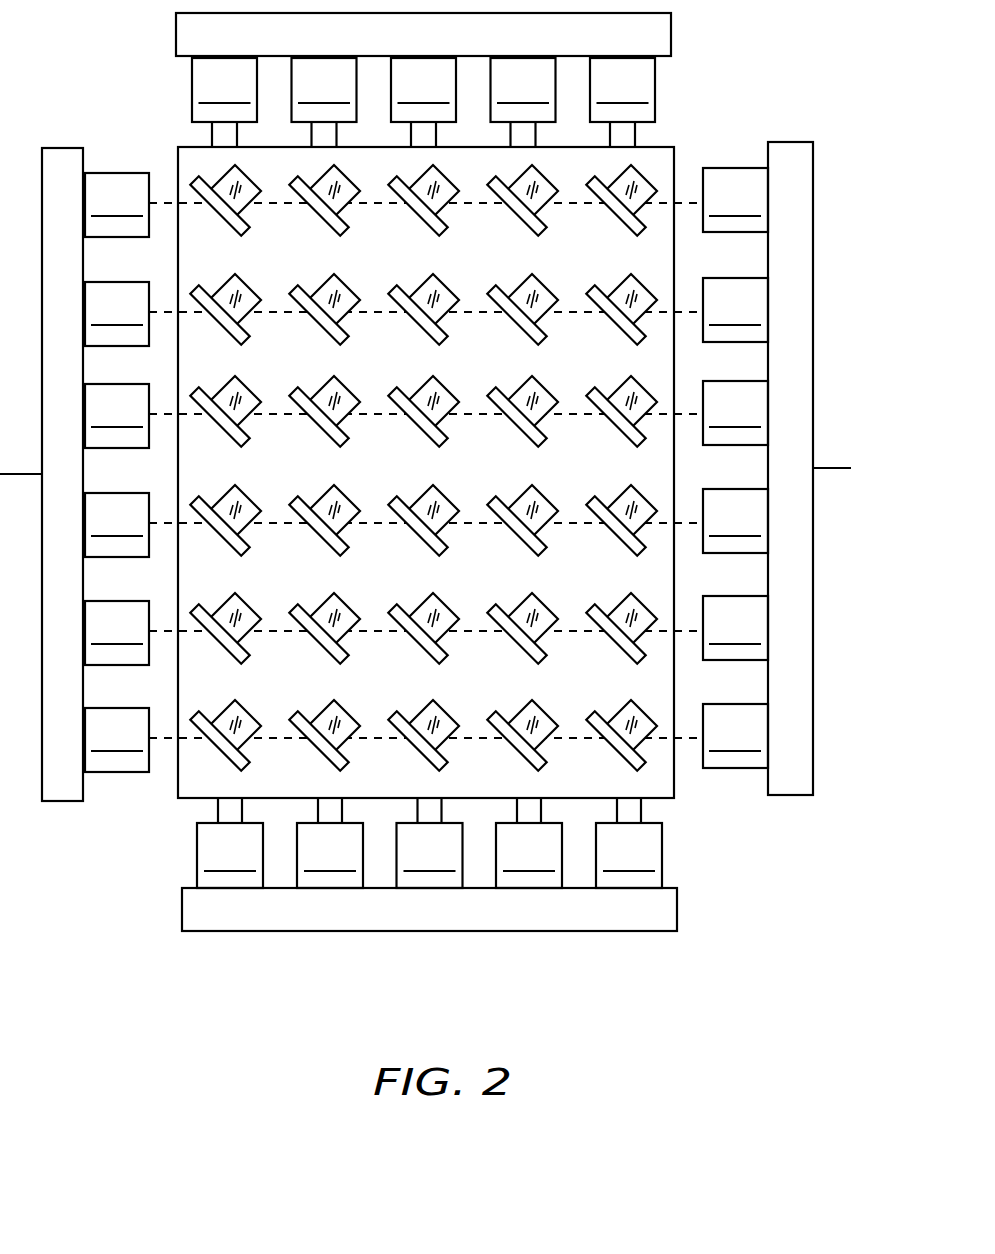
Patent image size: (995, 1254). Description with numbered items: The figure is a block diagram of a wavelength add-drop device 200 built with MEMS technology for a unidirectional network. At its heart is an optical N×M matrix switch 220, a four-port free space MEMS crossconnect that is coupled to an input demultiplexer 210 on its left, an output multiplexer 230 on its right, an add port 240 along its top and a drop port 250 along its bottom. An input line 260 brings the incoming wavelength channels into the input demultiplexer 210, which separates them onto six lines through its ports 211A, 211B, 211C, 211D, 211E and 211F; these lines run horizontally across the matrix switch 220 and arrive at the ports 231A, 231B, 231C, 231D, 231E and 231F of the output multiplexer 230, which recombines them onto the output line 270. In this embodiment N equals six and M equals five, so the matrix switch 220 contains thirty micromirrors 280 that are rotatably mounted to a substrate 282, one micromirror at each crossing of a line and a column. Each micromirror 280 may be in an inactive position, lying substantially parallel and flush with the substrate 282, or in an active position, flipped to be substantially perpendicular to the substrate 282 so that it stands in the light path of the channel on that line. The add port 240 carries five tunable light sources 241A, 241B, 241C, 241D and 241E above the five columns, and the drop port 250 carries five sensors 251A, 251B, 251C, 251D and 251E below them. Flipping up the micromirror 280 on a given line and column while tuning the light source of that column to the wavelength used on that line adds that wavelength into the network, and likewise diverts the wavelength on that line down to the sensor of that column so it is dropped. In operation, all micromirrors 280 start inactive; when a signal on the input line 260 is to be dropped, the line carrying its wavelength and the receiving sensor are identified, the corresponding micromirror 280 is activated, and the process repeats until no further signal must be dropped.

The wavelength add-drop device 200 is at (120, 884).
The input demultiplexer 210 is at (58, 802).
The input demultiplexer output port 211A is at (117, 205).
The input demultiplexer output port 211B is at (117, 314).
The input demultiplexer output port 211C is at (117, 416).
The input demultiplexer output port 211D is at (117, 525).
The input demultiplexer output port 211E is at (117, 633).
The input demultiplexer output port 211F is at (117, 740).
The optical N×M matrix switch 220 is at (178, 794).
The output multiplexer 230 is at (785, 796).
The output multiplexer input port 231A is at (735, 200).
The output multiplexer input port 231B is at (735, 310).
The output multiplexer input port 231C is at (735, 413).
The output multiplexer input port 231D is at (735, 521).
The output multiplexer input port 231E is at (735, 628).
The output multiplexer input port 231F is at (735, 736).
The add port 240 is at (671, 24).
The light source 241A is at (224, 102).
The light source 241B is at (324, 102).
The light source 241C is at (423, 102).
The light source 241D is at (523, 102).
The light source 241E is at (622, 102).
The drop port 250 is at (652, 931).
The sensor 251A is at (230, 843).
The sensor 251B is at (330, 843).
The sensor 251C is at (430, 843).
The sensor 251D is at (529, 843).
The sensor 251E is at (629, 843).
The input line 260 is at (10, 475).
The output line 270 is at (835, 469).
The micromirror 280 is at (645, 167).
The substrate 282 is at (658, 232).